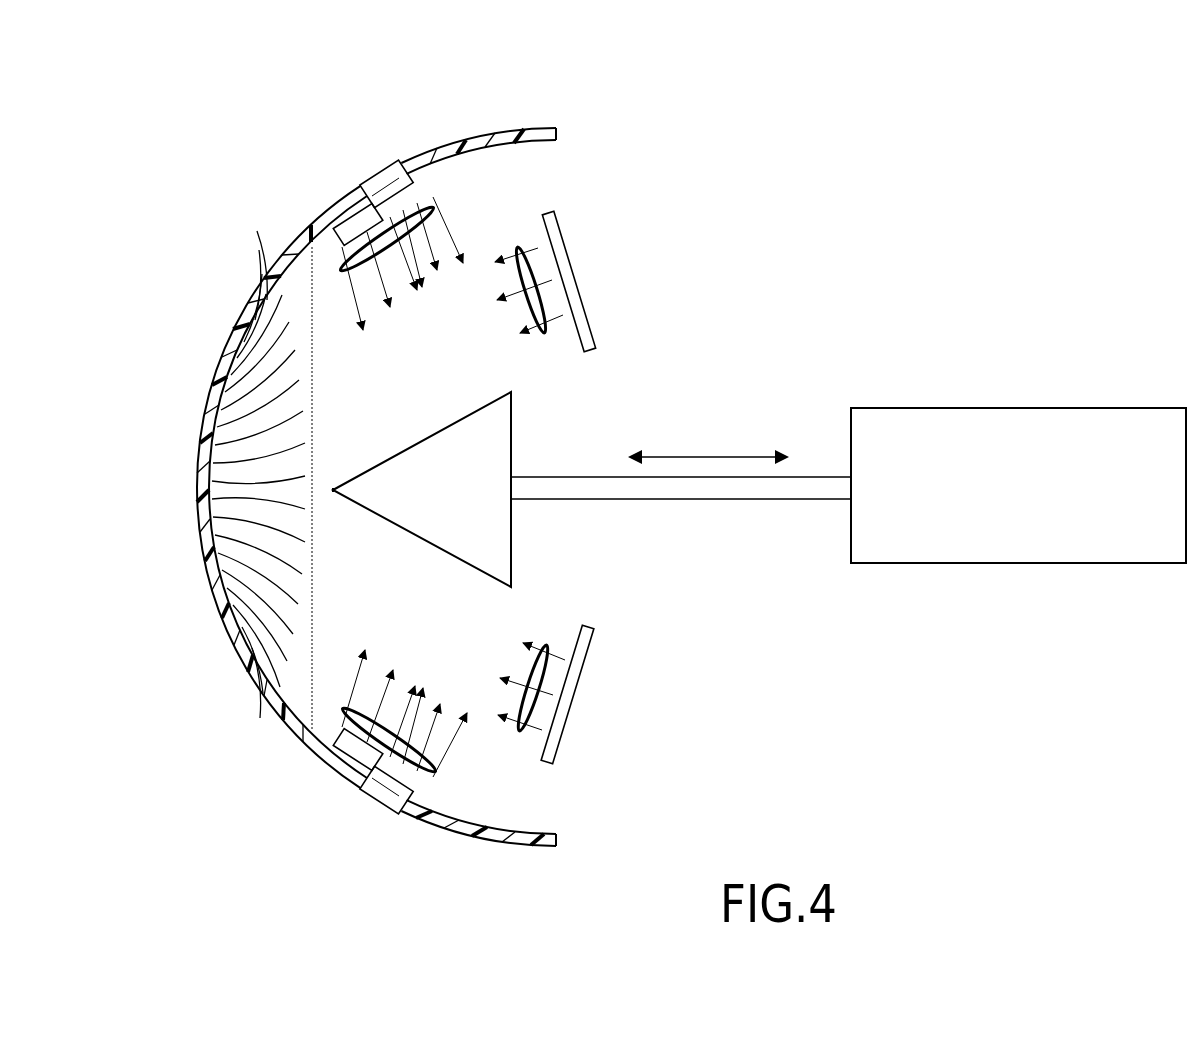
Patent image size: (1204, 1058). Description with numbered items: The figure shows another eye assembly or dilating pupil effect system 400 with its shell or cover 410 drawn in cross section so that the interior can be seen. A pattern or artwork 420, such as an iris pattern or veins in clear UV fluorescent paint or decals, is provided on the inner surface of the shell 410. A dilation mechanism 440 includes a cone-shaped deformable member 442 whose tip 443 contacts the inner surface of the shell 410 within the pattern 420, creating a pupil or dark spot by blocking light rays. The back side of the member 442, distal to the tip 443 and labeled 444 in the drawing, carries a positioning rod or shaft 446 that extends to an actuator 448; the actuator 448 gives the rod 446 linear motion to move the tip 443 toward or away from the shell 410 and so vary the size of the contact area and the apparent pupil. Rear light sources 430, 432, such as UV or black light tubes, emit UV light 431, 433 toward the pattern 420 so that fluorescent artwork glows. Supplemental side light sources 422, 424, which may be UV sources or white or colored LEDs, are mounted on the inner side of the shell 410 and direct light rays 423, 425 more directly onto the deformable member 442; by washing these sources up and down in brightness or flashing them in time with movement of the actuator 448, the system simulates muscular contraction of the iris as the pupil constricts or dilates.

The eye assembly 400 is at (240, 198).
The shell 410 is at (490, 130).
The pattern 420 is at (262, 372).
The supplemental side light source 422 is at (377, 200).
The light rays 423 is at (428, 213).
The supplemental side light source 424 is at (365, 777).
The lens 425 is at (433, 772).
The rear light source 430 is at (573, 280).
The UV light 431 is at (547, 317).
The rear light source 432 is at (562, 732).
The UV light 433 is at (548, 663).
The dilation mechanism 440 is at (790, 573).
The deformable member 442 is at (521, 571).
The tip 443 is at (333, 492).
The shaft 444 is at (513, 513).
The positioning rod 446 is at (590, 477).
The actuator 448 is at (1070, 408).